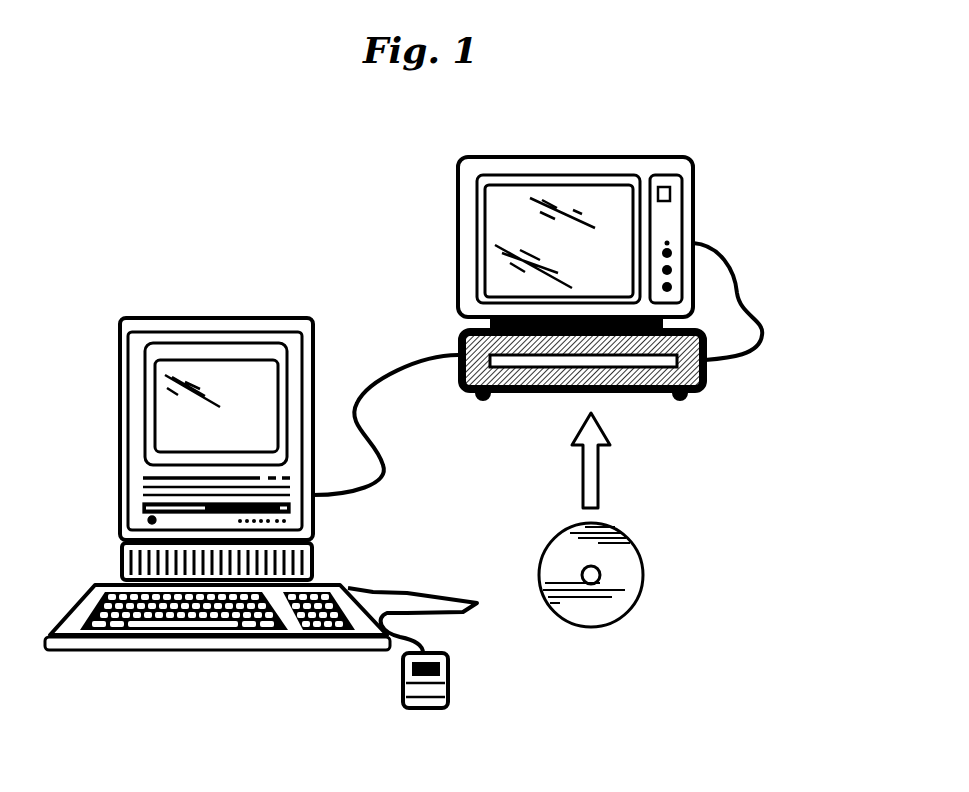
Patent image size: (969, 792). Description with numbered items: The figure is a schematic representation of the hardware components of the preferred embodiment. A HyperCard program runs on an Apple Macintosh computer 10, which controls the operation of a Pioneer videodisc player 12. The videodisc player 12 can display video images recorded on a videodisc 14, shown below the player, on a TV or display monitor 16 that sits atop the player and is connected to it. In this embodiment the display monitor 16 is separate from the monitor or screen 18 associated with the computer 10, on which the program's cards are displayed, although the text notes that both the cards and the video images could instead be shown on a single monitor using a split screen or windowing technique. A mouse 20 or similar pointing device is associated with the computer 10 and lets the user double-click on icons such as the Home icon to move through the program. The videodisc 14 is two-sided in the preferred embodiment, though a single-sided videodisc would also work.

The computer 10 is at (205, 296).
The videodisc player 12 is at (627, 410).
The videodisc 14 is at (643, 572).
The display monitor 16 is at (603, 136).
The monitor or screen 18 is at (250, 318).
The mouse 20 is at (400, 668).